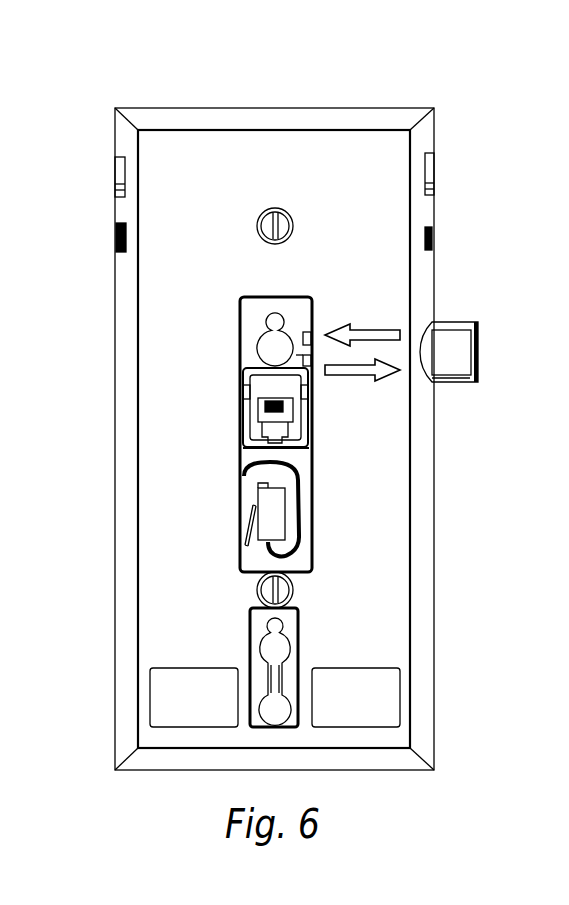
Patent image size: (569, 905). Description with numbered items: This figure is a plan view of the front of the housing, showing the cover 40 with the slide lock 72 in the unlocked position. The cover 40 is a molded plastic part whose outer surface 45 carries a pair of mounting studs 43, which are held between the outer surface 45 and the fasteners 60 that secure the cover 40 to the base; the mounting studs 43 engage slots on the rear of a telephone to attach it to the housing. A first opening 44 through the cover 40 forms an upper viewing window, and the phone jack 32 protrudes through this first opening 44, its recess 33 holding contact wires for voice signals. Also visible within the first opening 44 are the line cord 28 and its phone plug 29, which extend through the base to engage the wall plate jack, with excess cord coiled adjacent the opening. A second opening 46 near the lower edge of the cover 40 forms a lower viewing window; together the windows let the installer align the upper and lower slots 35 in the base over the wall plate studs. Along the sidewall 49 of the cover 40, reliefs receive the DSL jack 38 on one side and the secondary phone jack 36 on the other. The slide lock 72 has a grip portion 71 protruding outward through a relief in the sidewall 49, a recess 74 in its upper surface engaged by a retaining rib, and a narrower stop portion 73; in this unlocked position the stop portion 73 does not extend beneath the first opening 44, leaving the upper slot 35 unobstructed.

The cover 40 is at (382, 772).
The sidewall 49 is at (128, 283).
The outer surface 45 is at (200, 241).
The DSL jack 38 is at (115, 173).
The secondary phone jack 36 is at (435, 172).
The mounting studs 43 is at (283, 210).
The fasteners 60 is at (268, 214).
The first opening 44 is at (300, 457).
The upper and lower slots 35 is at (240, 343).
The stop portion 73 is at (240, 353).
The recess 33 is at (250, 383).
The phone jack 32 is at (260, 425).
The line cord 28 is at (300, 503).
The phone plug 29 is at (262, 530).
The second opening 46 is at (300, 610).
The grip portion 71 is at (482, 350).
The recess 74 is at (447, 350).
The slide lock 72 is at (458, 385).